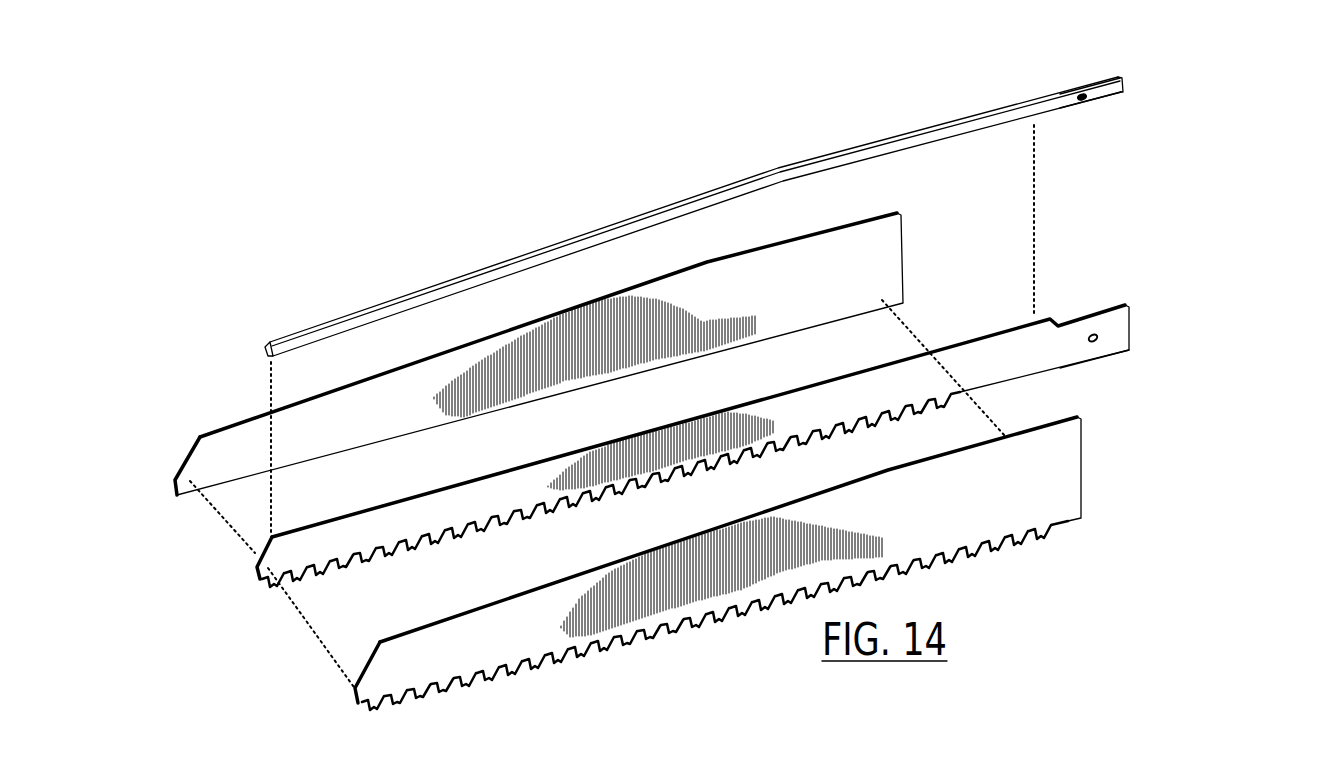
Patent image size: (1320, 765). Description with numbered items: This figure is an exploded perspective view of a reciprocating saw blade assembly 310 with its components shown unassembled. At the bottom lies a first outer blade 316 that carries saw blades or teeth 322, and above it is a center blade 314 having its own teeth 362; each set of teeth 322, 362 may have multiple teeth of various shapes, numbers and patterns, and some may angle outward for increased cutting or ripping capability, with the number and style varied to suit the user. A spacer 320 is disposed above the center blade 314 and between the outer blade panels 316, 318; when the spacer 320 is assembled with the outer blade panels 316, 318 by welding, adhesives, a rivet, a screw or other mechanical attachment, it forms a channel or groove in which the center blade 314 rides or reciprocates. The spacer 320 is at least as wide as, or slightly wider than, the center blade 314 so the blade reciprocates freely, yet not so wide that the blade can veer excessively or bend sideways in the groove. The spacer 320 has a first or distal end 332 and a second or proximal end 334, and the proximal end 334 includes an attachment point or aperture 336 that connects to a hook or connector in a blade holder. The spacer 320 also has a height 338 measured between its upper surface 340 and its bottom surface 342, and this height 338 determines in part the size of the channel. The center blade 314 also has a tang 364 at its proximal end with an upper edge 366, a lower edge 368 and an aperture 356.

The saw blade assembly 310 is at (703, 365).
The center blade 314 is at (713, 426).
The first outer blade 316 is at (742, 563).
The outer blade panel 318 is at (207, 466).
The spacer 320 is at (713, 201).
The teeth 322 is at (672, 621).
The distal end 332 is at (262, 344).
The proximal end 334 is at (1117, 79).
The aperture 336 is at (1078, 96).
The height 338 is at (1149, 64).
The upper surface 340 is at (1125, 72).
The bottom surface 342 is at (1128, 91).
The aperture in tang 356 is at (1098, 333).
The teeth 362 is at (509, 521).
The tang 364 is at (1111, 328).
The upper edge of tang 366 is at (1130, 306).
The lower edge of tang 368 is at (1131, 347).